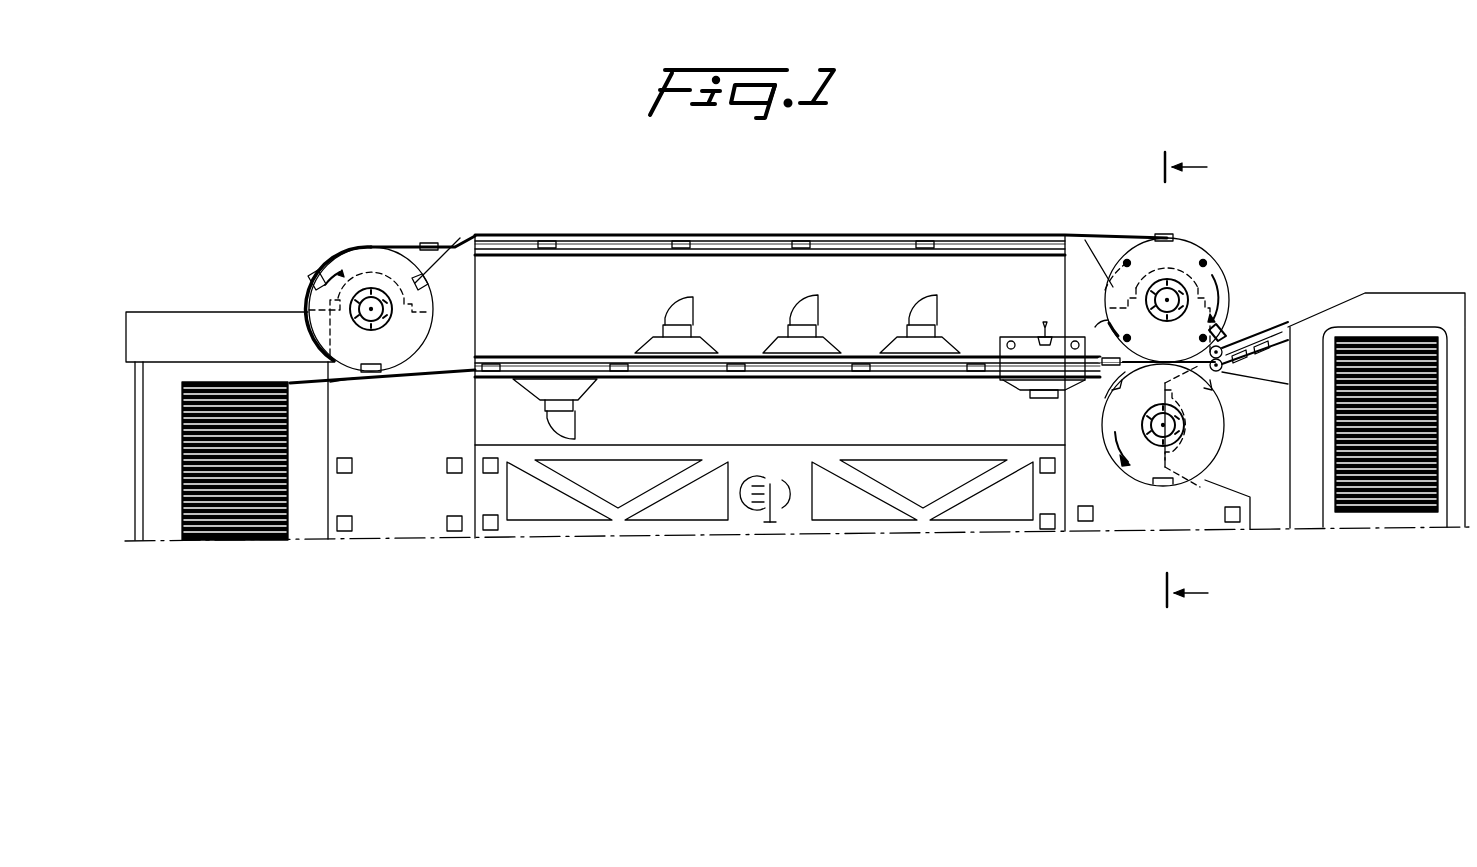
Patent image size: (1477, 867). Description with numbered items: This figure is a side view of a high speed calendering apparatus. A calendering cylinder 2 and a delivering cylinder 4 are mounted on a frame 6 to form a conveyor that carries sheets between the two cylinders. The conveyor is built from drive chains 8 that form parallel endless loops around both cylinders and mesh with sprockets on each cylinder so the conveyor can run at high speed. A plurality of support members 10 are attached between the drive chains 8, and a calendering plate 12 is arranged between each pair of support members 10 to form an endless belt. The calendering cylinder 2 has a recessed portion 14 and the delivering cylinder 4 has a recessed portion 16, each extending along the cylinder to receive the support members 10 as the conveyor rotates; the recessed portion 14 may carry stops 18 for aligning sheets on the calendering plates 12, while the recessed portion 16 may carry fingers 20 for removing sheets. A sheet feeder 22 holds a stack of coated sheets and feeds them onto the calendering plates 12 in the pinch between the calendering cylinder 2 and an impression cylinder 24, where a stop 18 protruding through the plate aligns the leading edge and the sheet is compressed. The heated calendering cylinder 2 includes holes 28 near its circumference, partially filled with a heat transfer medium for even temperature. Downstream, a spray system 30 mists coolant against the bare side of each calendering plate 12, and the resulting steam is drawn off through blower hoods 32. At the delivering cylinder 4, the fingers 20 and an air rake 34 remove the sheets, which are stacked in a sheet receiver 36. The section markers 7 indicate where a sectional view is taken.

The calendering cylinder 2 is at (1180, 262).
The delivering cylinder 4 is at (357, 264).
The frame 6 is at (735, 520).
The section line 7 is at (1177, 379).
The drive chains 8 is at (1113, 236).
The support members 10 is at (313, 276).
The calendering plate 12 is at (870, 234).
The recessed portion 14 is at (1108, 328).
The recessed portion 16 is at (456, 240).
The stops 18 is at (1116, 404).
The fingers 20 is at (418, 280).
The sheet feeder 22 is at (1402, 302).
The impression cylinder 24 is at (1145, 478).
The holes 28 is at (1213, 262).
The spray system 30 is at (1030, 346).
The blower hoods 32 is at (668, 311).
The air rake 34 is at (313, 386).
The sheet receiver 36 is at (236, 308).